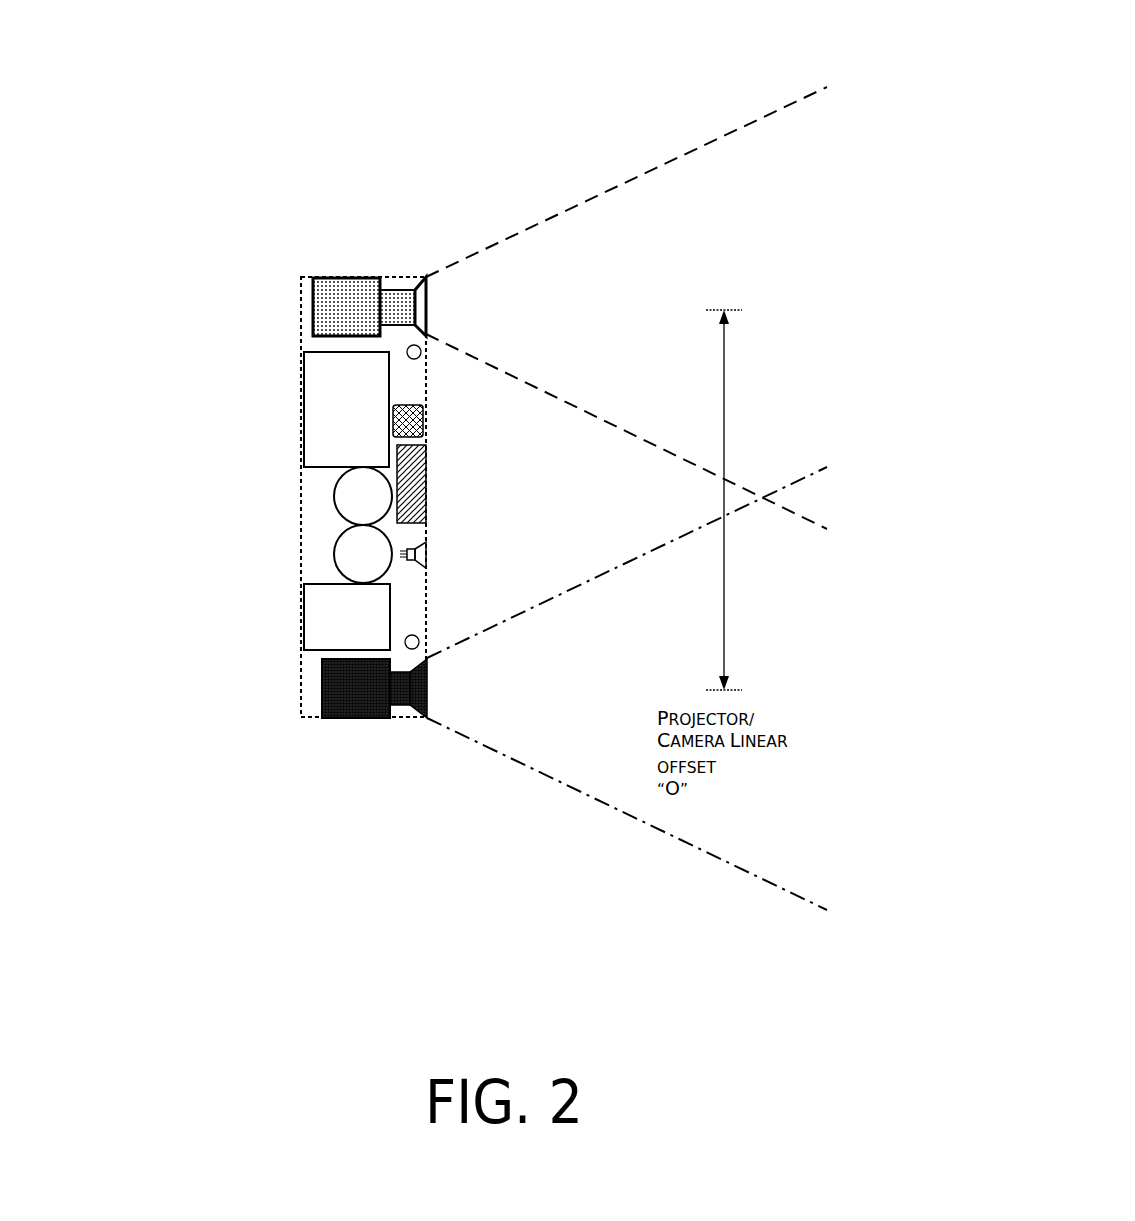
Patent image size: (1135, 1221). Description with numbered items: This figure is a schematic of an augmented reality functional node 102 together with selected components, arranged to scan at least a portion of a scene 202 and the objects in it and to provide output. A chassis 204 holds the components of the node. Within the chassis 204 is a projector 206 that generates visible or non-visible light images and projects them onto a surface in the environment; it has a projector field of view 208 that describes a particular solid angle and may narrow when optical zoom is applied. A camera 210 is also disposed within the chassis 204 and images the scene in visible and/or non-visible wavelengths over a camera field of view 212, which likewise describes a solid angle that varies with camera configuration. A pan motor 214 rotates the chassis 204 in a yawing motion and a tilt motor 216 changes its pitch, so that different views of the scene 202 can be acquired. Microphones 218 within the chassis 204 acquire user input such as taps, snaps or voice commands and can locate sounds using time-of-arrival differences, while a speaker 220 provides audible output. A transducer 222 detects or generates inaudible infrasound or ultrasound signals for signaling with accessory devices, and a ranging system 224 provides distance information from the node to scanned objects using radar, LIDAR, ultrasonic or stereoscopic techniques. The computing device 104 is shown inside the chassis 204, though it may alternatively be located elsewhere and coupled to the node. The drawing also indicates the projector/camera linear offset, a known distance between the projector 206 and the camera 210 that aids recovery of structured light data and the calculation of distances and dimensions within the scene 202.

The augmented reality functional node 102 is at (428, 434).
The computing device 104 is at (260, 407).
The scene 202 is at (860, 501).
The chassis 204 is at (383, 454).
The projector 206 is at (283, 294).
The projector field of view 208 is at (606, 289).
The camera 210 is at (303, 721).
The camera field of view 212 is at (594, 696).
The pan motor 214 is at (261, 506).
The tilt motor 216 is at (259, 583).
The microphone 218 is at (567, 454).
The speaker 220 is at (487, 536).
The transducer 222 is at (519, 373).
The ranging system 224 is at (488, 469).